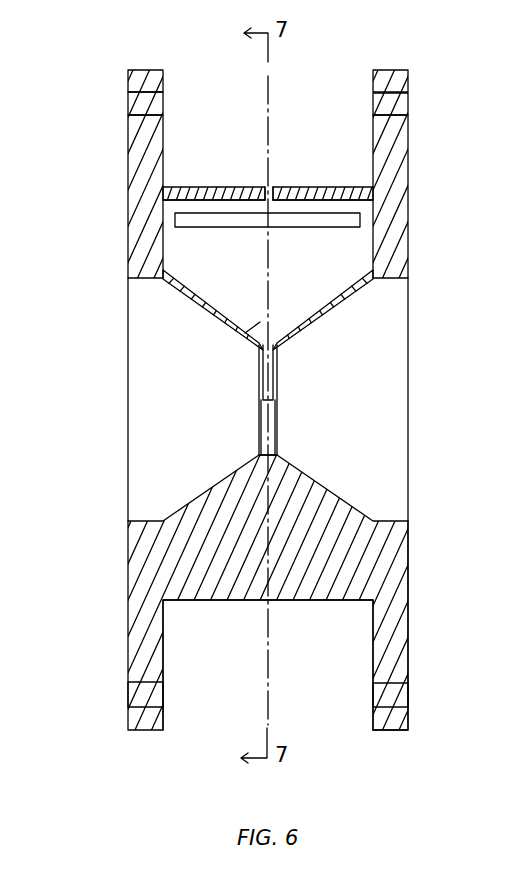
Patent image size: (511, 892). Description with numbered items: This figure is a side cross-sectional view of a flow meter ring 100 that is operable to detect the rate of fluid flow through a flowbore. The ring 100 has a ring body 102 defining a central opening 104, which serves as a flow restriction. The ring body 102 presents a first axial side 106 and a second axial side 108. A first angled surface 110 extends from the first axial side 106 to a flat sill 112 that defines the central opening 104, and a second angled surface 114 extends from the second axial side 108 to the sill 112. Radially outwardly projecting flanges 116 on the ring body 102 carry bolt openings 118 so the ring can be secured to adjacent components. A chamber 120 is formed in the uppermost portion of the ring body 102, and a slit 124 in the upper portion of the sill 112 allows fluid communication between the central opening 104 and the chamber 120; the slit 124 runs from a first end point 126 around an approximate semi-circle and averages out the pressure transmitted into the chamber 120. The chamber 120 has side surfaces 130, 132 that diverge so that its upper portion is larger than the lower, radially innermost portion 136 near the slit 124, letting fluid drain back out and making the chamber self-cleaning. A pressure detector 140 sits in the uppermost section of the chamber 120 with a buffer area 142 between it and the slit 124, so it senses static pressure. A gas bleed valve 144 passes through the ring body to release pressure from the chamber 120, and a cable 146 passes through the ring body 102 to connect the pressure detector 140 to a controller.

The flow meter ring 100 is at (403, 43).
The ring body 102 is at (323, 602).
The central opening 104 is at (280, 449).
The first axial side 106 is at (128, 195).
The second axial side 108 is at (408, 595).
The first angled surface 110 is at (192, 502).
The flat sill 112 is at (264, 451).
The second angled surface 114 is at (355, 292).
The flanges 116 is at (163, 82).
The bolt openings 118 is at (142, 115).
The chamber 120 is at (312, 253).
The slit 124 is at (270, 374).
The first end point 126 is at (265, 397).
The side surface 130 is at (185, 288).
The side surface 132 is at (308, 201).
The lower, radially innermost portion 136 is at (258, 330).
The pressure detector 140 is at (218, 222).
The buffer area 142 is at (318, 291).
The gas bleed valve 144 is at (365, 187).
The cable 146 is at (273, 185).